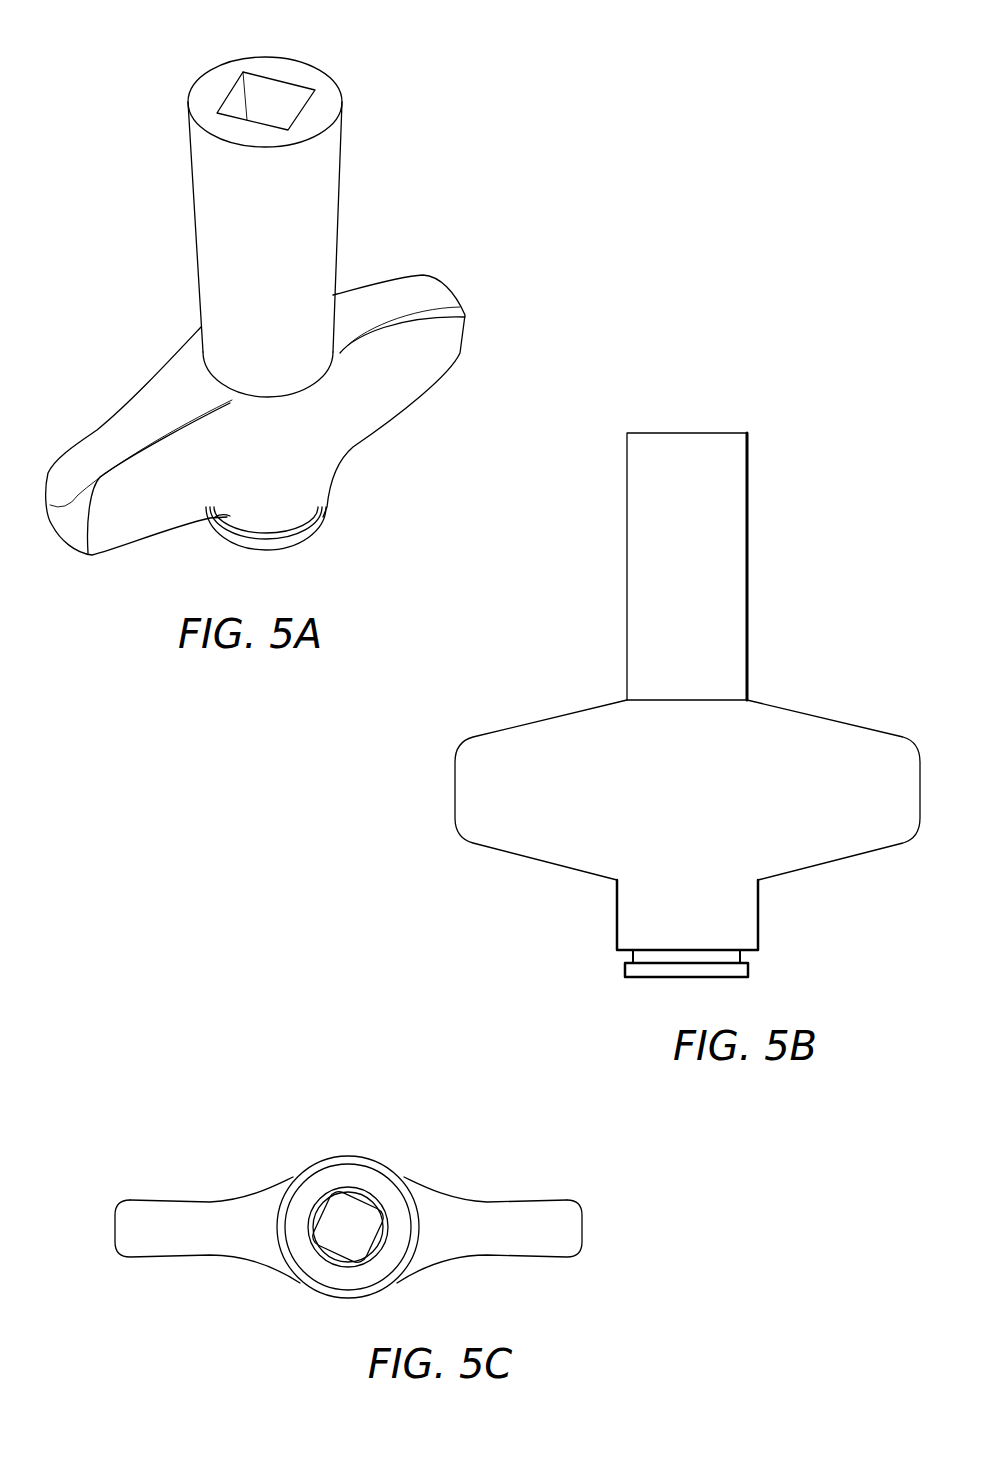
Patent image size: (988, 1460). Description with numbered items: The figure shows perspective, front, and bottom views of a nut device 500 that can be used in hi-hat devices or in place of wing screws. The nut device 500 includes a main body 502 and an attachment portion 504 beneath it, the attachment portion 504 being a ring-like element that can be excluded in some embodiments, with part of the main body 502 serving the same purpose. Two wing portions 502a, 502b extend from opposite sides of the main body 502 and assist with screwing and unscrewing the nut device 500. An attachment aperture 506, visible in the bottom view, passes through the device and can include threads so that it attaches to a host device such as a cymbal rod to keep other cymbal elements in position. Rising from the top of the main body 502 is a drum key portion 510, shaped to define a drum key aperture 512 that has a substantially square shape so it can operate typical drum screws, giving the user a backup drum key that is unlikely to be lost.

In FIG. 5A, the nut device 500 is at (145, 69).
In FIG. 5B, the nut device 500 is at (808, 514).
In FIG. 5C, the nut device 500 is at (224, 1081).
In FIG. 5A, the main body 502 is at (313, 443).
In FIG. 5B, the main body 502 is at (667, 817).
In FIG. 5C, the main body 502 is at (317, 1292).
In FIG. 5A, the wing portion 502a is at (123, 530).
In FIG. 5B, the wing portion 502a is at (532, 740).
In FIG. 5C, the wing portion 502a is at (160, 1217).
In FIG. 5A, the wing portion 502b is at (443, 352).
In FIG. 5B, the wing portion 502b is at (845, 740).
In FIG. 5C, the wing portion 502b is at (528, 1217).
In FIG. 5A, the attachment portion 504 is at (327, 513).
In FIG. 5B, the attachment portion 504 is at (748, 965).
In FIG. 5C, the attachment portion 504 is at (355, 1180).
In FIG. 5C, the attachment aperture 506 is at (355, 1200).
In FIG. 5A, the drum key portion 510 is at (330, 172).
In FIG. 5B, the drum key portion 510 is at (627, 623).
In FIG. 5A, the drum key aperture 512 is at (277, 92).